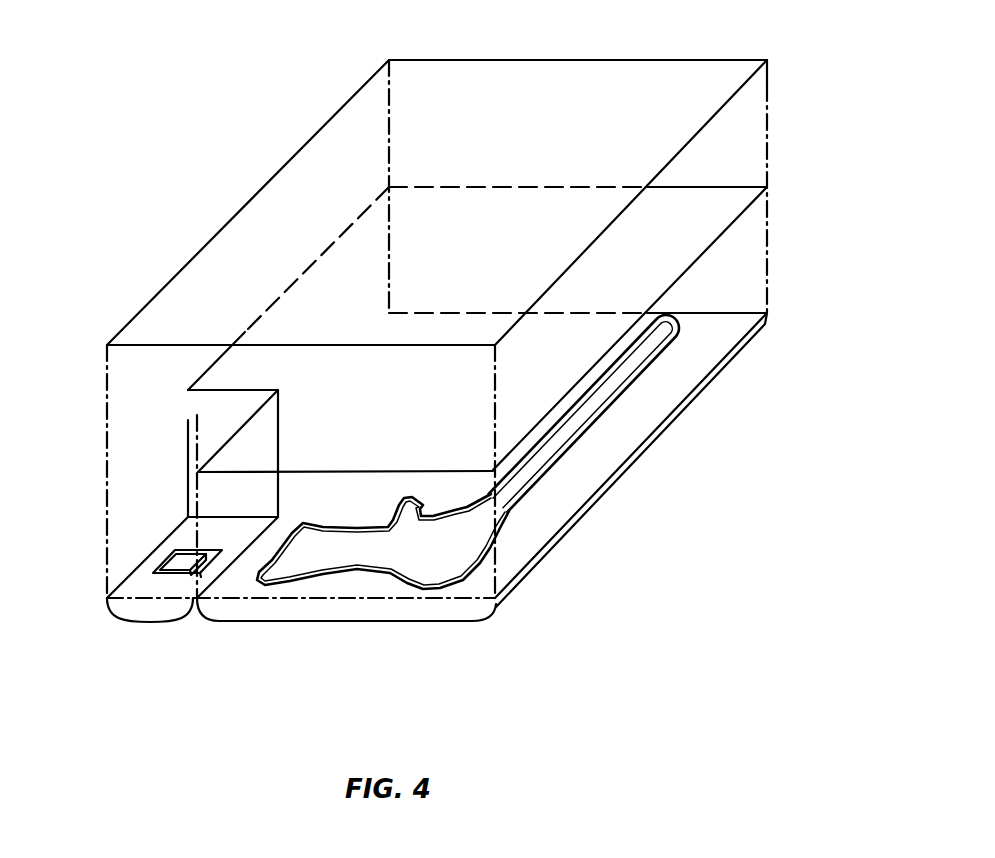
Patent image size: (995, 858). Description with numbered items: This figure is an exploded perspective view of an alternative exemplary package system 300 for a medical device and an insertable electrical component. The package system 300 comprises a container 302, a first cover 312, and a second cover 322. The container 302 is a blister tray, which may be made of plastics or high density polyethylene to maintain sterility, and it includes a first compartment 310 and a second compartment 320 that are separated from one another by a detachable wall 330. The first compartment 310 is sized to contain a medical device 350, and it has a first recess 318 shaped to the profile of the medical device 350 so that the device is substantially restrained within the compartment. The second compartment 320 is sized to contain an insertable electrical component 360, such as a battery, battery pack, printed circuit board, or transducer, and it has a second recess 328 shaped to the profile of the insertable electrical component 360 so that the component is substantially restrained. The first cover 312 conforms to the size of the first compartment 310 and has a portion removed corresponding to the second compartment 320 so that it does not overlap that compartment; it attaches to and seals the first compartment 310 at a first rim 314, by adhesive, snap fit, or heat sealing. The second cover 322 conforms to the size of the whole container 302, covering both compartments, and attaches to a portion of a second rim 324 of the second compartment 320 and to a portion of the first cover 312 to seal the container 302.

The package system 300 is at (180, 120).
The container 302 is at (596, 552).
The first compartment 310 is at (597, 462).
The first cover 312 is at (708, 250).
The first rim 314 is at (733, 352).
The first recess 318 is at (613, 388).
The second compartment 320 is at (133, 587).
The second cover 322 is at (637, 60).
The second rim 324 is at (178, 528).
The second recess 328 is at (203, 565).
The detachable wall 330 is at (195, 602).
The medical device 350 is at (413, 565).
The insertable electrical component 360 is at (166, 553).